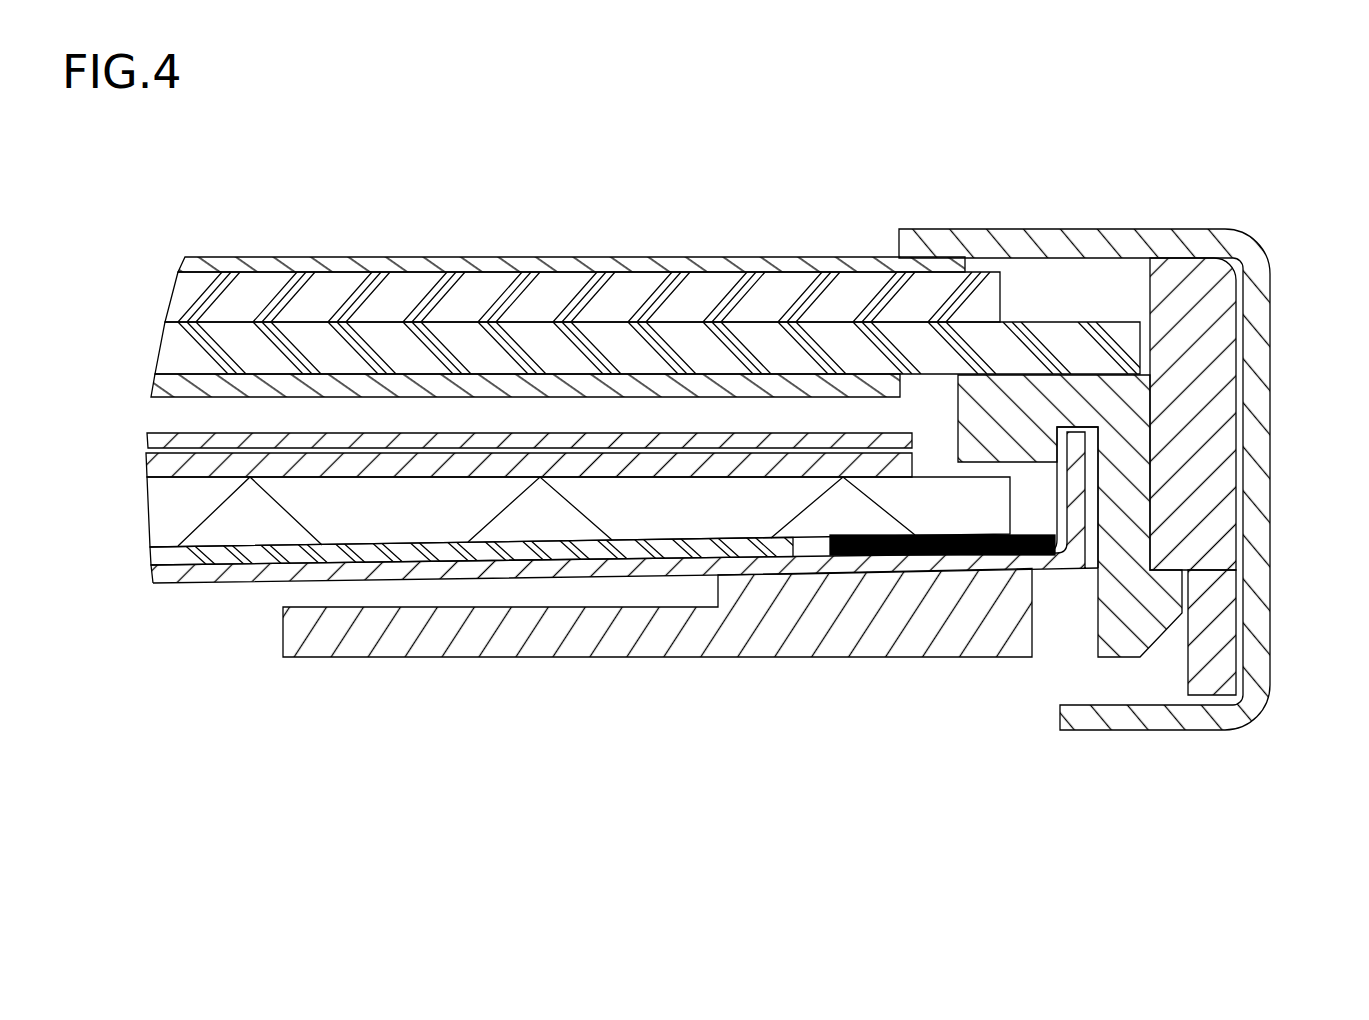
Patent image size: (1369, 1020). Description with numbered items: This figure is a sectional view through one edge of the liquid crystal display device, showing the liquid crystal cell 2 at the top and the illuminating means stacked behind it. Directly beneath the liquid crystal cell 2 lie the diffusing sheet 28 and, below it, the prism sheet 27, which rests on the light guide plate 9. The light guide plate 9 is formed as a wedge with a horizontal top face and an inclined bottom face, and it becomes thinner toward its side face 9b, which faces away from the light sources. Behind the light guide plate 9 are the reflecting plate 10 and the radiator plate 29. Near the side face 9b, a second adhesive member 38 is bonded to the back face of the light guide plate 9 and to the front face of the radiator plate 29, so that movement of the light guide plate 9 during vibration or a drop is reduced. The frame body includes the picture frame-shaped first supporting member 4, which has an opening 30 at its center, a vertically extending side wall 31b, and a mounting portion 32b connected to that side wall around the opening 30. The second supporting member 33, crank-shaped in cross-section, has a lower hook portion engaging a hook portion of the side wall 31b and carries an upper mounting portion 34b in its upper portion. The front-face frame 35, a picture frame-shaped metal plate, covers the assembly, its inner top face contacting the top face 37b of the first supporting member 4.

The liquid crystal cell 2 is at (763, 257).
The first supporting member 4 is at (701, 657).
The light guide plate 9 is at (696, 571).
The side face 9b is at (1010, 488).
The reflecting plate 10 is at (197, 532).
The prism sheet 27 is at (167, 466).
The diffusing sheet 28 is at (160, 442).
The radiator plate 29 is at (180, 580).
The opening 30 is at (257, 657).
The side wall 31b is at (1187, 397).
The mounting portion 32b is at (848, 562).
The second supporting member 33 is at (1150, 583).
The upper mounting portion 34b is at (1005, 400).
The front-face frame 35 is at (1010, 233).
The top face 37b is at (1175, 268).
The second adhesive member 38 is at (935, 555).